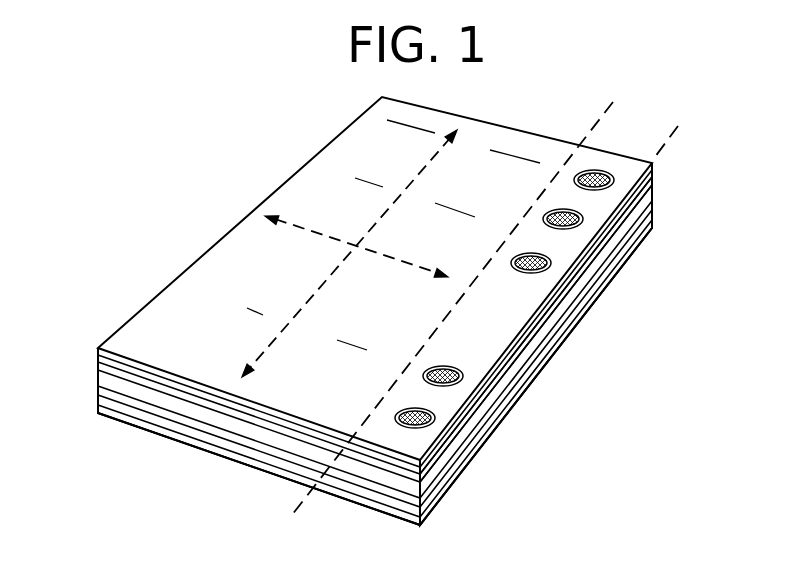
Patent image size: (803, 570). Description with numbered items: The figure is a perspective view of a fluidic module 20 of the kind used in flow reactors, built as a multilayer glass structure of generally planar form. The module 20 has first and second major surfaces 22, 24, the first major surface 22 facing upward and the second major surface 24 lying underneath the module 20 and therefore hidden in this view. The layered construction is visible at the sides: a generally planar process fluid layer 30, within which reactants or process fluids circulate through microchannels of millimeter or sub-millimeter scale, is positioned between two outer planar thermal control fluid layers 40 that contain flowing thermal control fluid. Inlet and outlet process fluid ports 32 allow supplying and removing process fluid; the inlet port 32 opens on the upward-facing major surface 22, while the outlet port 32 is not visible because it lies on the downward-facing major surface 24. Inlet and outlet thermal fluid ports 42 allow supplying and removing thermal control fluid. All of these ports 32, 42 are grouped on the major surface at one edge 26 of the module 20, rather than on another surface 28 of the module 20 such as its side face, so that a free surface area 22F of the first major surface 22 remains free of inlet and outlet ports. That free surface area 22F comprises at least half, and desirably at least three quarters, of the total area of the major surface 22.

The fluidic module 20 is at (220, 497).
The first major surface 22 is at (150, 322).
The free surface area 22F is at (349, 253).
The second major surface 24 is at (117, 434).
The edge 26 is at (683, 118).
The surface 28 is at (447, 482).
The process fluid layer 30 is at (657, 182).
The inlet and outlet process fluid ports 32 is at (575, 239).
The thermal control fluid layers 40 is at (657, 163).
The inlet and outlet thermal fluid ports 42 is at (467, 385).